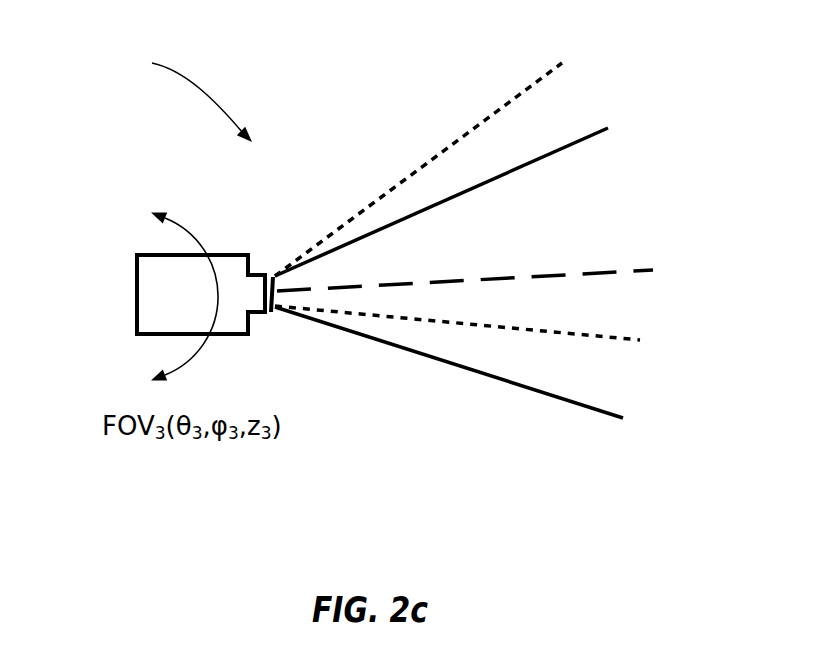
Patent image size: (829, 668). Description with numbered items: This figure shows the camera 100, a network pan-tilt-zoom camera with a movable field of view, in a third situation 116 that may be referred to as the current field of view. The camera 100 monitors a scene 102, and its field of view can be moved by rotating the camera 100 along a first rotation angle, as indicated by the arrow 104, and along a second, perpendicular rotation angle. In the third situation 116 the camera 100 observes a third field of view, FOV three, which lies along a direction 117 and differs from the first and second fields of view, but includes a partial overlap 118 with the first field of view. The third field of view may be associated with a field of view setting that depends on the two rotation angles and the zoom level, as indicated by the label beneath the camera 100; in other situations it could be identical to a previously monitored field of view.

The camera 100 is at (162, 292).
The scene 102 is at (493, 195).
The arrow 104 is at (209, 242).
The third situation 116 is at (179, 95).
The direction 117 is at (612, 273).
The partial overlap 118 is at (408, 253).